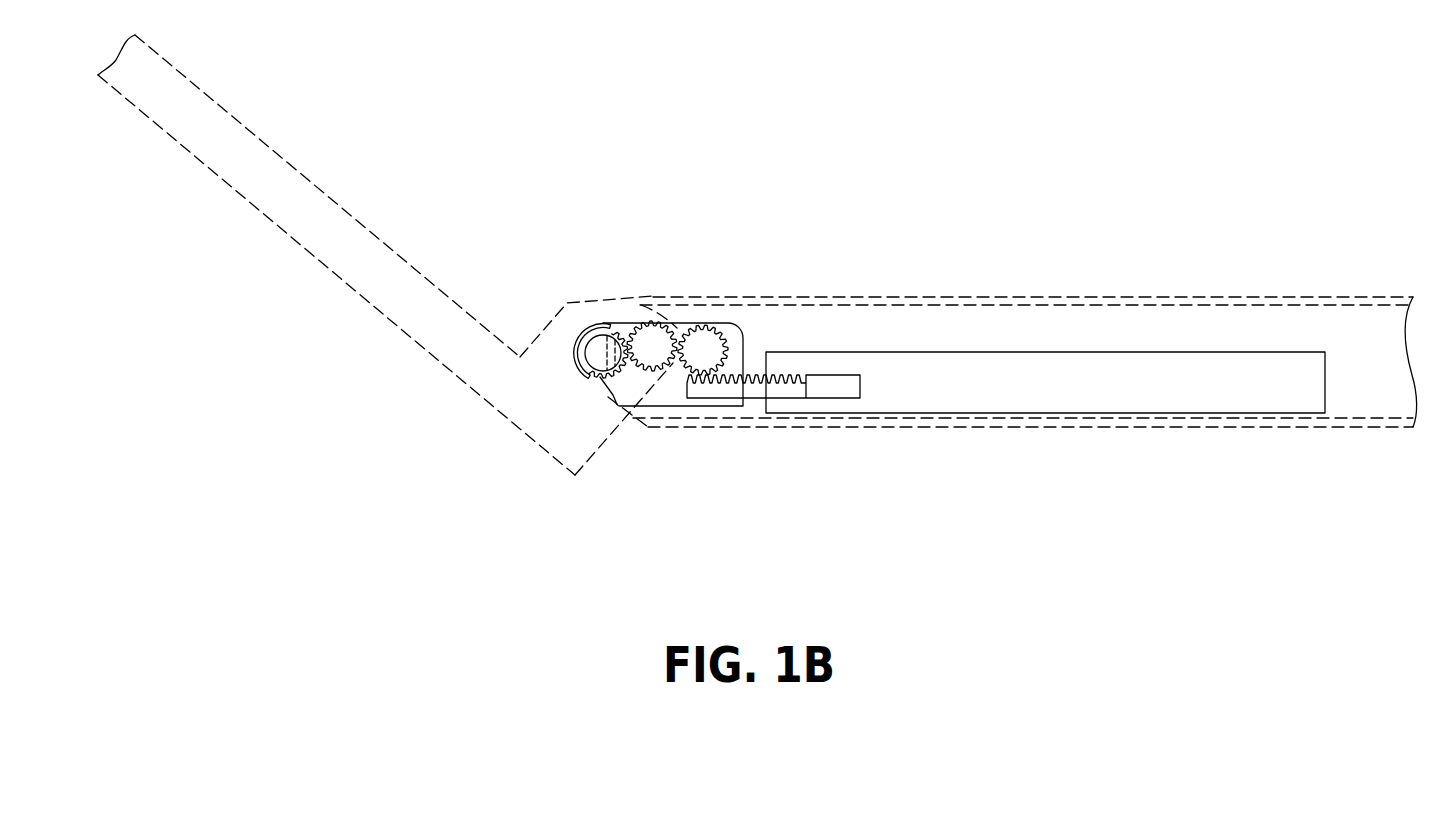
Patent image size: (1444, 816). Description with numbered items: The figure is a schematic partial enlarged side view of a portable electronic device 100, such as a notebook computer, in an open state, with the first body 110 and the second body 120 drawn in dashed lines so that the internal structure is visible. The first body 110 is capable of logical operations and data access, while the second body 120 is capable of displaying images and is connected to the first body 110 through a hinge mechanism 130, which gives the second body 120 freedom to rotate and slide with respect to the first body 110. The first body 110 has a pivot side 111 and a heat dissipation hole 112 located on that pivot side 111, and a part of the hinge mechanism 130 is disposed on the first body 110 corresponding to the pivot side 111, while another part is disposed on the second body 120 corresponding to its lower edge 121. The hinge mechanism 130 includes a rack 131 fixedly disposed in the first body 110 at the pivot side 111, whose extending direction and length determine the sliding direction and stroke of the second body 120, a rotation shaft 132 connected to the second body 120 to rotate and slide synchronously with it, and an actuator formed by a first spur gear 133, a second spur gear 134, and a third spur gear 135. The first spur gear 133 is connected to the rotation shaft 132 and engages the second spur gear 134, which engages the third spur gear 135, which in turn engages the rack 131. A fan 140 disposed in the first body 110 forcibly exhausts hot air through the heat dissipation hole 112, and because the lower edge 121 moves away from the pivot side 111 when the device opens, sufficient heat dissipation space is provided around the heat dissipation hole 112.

The portable electronic device 100 is at (132, 569).
The first body 110 is at (1373, 327).
The pivot side 111 is at (683, 422).
The heat dissipation hole 112 is at (640, 322).
The second body 120 is at (237, 178).
The lower edge 121 is at (540, 452).
The hinge mechanism 130 is at (749, 311).
The rack 131 is at (762, 392).
The rotation shaft 132 is at (603, 357).
The first spur gear 133 is at (623, 367).
The second spur gear 134 is at (653, 347).
The third spur gear 135 is at (703, 348).
The fan 140 is at (1080, 390).